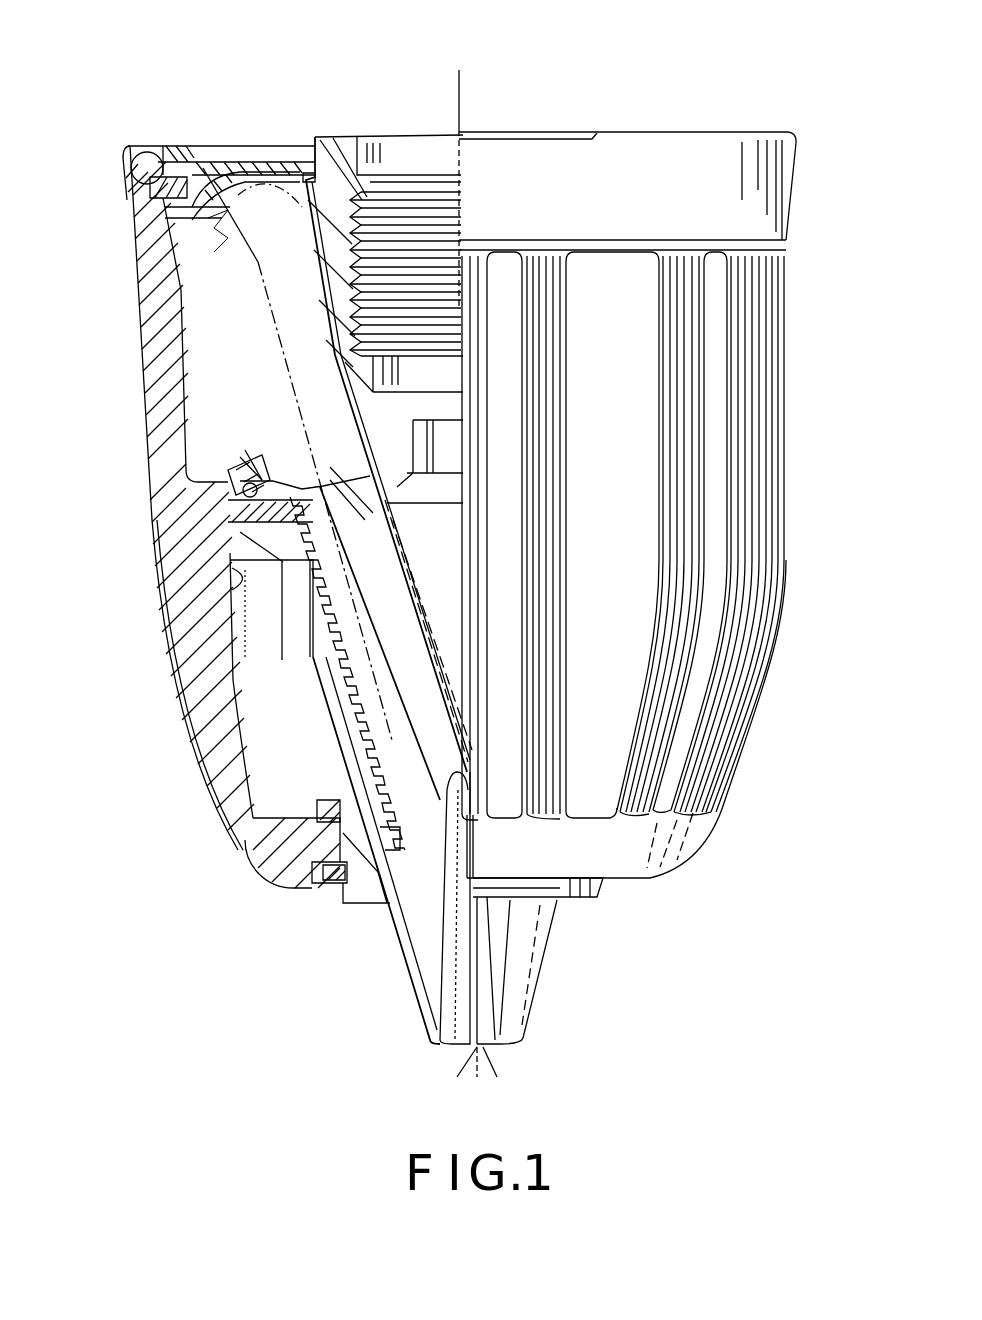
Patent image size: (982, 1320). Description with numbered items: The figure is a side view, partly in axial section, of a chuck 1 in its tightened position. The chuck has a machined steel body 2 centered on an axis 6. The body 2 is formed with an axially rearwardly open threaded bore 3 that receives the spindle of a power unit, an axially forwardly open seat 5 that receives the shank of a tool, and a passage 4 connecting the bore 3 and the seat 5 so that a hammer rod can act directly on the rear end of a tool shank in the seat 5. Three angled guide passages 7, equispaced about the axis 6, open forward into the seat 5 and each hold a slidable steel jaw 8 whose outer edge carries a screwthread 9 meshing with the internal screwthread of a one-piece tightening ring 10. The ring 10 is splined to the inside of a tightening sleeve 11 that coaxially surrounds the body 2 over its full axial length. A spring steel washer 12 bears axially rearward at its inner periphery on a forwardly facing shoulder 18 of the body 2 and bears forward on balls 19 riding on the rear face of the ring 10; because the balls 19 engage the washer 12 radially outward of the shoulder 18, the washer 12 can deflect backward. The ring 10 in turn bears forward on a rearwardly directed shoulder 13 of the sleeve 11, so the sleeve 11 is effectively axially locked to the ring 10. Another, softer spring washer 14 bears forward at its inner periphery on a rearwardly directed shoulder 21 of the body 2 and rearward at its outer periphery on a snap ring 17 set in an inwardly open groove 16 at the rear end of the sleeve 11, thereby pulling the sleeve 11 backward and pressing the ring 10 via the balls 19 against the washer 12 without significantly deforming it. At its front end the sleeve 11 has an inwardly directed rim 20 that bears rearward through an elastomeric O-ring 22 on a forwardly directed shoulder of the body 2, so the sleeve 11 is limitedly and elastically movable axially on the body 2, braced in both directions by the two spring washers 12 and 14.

The chuck 1 is at (784, 705).
The body 2 is at (332, 205).
The threaded bore 3 is at (390, 203).
The passage 4 is at (455, 440).
The seat 5 is at (445, 552).
The axis 6 is at (460, 92).
The guide passages 7 is at (330, 765).
The jaw 8 is at (437, 973).
The screwthread 9 is at (258, 722).
The tightening ring 10 is at (247, 522).
The tightening sleeve 11 is at (710, 462).
The spring steel washer 12 is at (240, 457).
The shoulder 13 is at (255, 622).
The spring washer 14 is at (243, 160).
The groove 16 is at (132, 178).
The snap ring 17 is at (173, 165).
The shoulder 18 is at (245, 450).
The balls 19 is at (232, 468).
The rim 20 is at (290, 860).
The shoulder 21 is at (300, 175).
The O-ring 22 is at (273, 833).